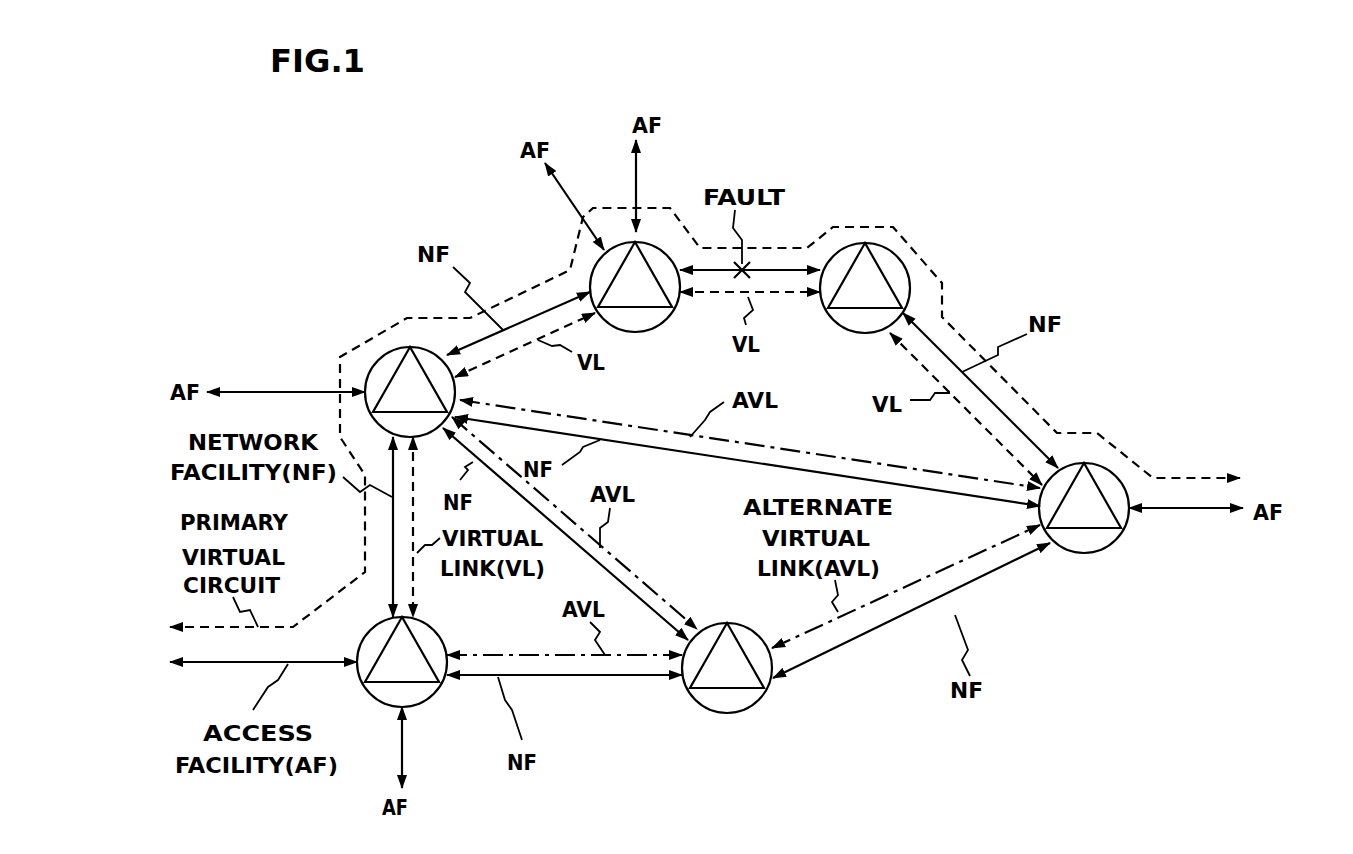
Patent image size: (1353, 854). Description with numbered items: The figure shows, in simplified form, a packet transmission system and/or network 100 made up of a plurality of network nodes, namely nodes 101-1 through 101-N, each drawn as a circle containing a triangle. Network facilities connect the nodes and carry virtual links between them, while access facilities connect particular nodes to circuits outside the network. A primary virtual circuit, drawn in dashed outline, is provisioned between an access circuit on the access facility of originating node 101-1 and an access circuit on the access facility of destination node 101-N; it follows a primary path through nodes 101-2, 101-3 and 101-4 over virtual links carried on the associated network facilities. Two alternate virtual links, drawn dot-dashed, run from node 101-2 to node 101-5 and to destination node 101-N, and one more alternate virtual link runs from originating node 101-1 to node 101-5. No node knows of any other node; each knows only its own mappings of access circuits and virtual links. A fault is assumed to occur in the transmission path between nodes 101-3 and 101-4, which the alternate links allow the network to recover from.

The transmission system and/or network 100 is at (440, 127).
The originating node 101-1 is at (437, 630).
The network node 101-2 is at (380, 356).
The network node 101-3 is at (663, 317).
The network node 101-4 is at (850, 323).
The network node 101-5 is at (728, 620).
The destination node 101-N is at (1085, 462).